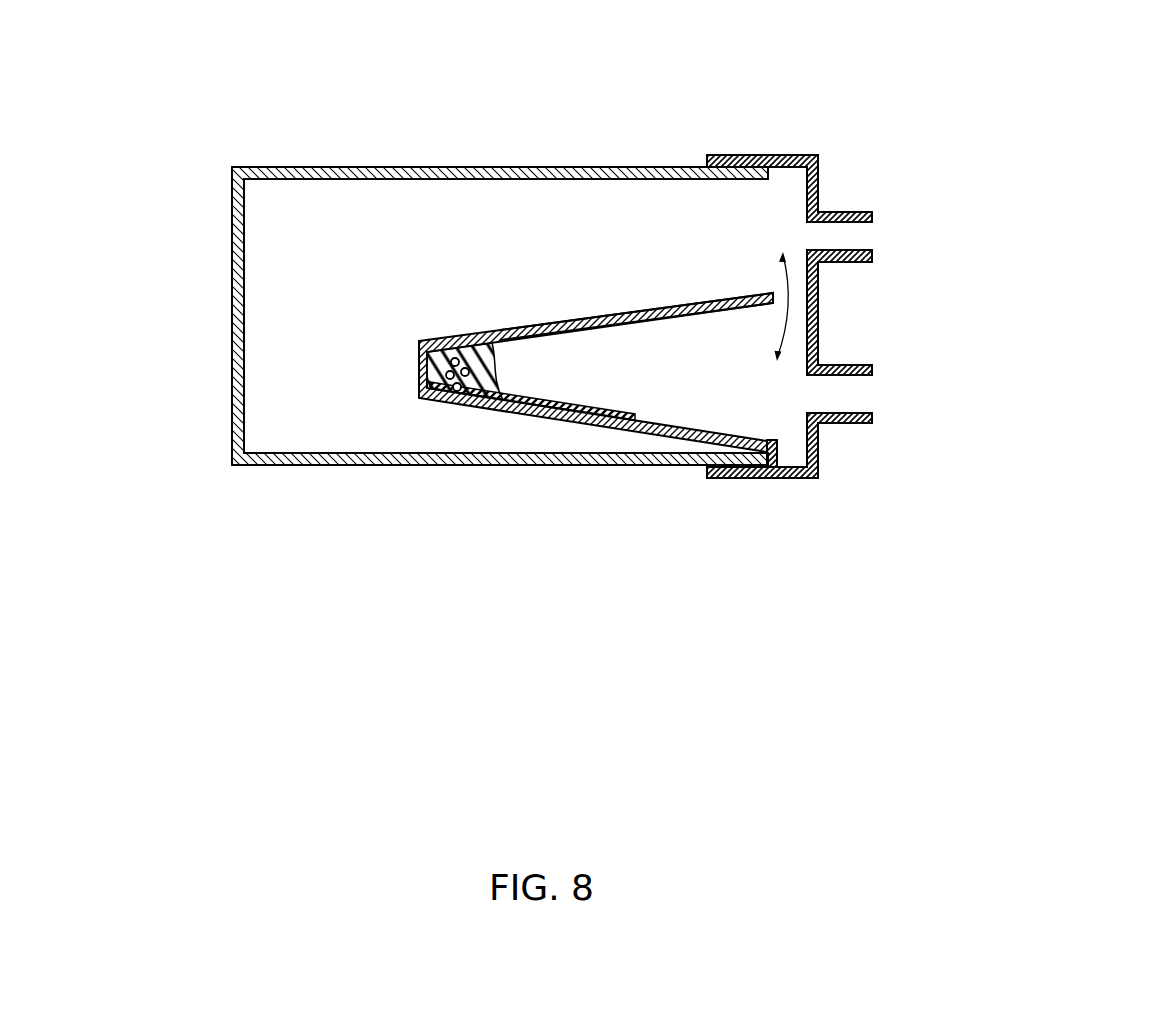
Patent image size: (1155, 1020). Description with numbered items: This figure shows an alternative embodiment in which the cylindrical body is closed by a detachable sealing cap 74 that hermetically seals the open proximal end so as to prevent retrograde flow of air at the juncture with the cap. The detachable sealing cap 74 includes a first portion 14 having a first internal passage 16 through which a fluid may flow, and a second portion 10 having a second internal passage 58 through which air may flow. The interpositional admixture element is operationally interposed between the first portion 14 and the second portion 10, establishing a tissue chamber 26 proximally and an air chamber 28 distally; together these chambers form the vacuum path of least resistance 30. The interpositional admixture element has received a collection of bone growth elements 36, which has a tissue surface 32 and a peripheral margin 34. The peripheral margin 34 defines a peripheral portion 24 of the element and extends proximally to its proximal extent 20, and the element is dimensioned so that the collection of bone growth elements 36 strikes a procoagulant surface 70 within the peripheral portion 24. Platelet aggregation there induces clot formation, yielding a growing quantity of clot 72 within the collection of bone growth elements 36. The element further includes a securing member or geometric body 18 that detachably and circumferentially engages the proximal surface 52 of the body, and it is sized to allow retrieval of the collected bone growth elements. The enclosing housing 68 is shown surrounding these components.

The second portion 10 is at (842, 205).
The first portion 14 is at (970, 314).
The first internal passage 16 is at (880, 392).
The securing member or geometric body 18 is at (860, 512).
The proximal extent 20 is at (896, 512).
The peripheral portion 24 is at (819, 434).
The tissue chamber 26 is at (752, 314).
The air chamber 28 is at (665, 228).
The vacuum path of least resistance 30 is at (775, 300).
The tissue surface 32 is at (497, 368).
The peripheral margin 34 is at (756, 260).
The collection of bone growth elements 36 is at (476, 346).
The proximal surface 52 is at (767, 467).
The second internal passage 58 is at (875, 237).
The housing 68 is at (229, 302).
The procoagulant surface 70 is at (819, 426).
The quantity of clot 72 is at (440, 382).
The detachable sealing cap 74 is at (825, 315).